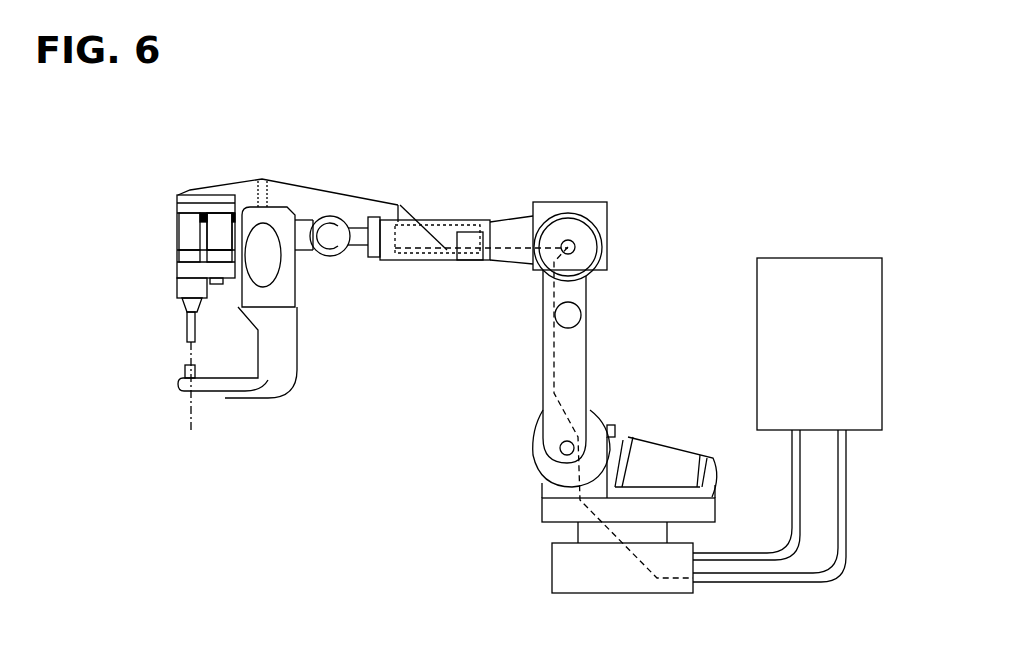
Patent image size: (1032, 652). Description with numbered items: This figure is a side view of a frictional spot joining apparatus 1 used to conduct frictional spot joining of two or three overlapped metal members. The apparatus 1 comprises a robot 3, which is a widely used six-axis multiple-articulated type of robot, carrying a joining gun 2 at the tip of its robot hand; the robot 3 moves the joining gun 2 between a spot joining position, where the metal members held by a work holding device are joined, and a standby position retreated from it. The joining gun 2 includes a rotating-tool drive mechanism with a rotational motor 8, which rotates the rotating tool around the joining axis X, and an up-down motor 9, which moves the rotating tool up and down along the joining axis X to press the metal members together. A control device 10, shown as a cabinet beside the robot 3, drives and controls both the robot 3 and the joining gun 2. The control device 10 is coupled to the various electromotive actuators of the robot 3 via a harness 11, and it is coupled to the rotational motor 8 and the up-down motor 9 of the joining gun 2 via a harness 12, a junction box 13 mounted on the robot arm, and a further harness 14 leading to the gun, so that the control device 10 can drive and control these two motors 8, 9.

The frictional spot joining apparatus 1 is at (677, 163).
The joining gun 2 is at (302, 298).
The robot 3 is at (566, 198).
The rotational motor 8 is at (180, 237).
The up-down motor 9 is at (219, 229).
The control device 10 is at (818, 247).
The harness 11 is at (778, 543).
The harness 12 is at (827, 574).
The junction box 13 is at (469, 232).
The harness 14 is at (278, 178).